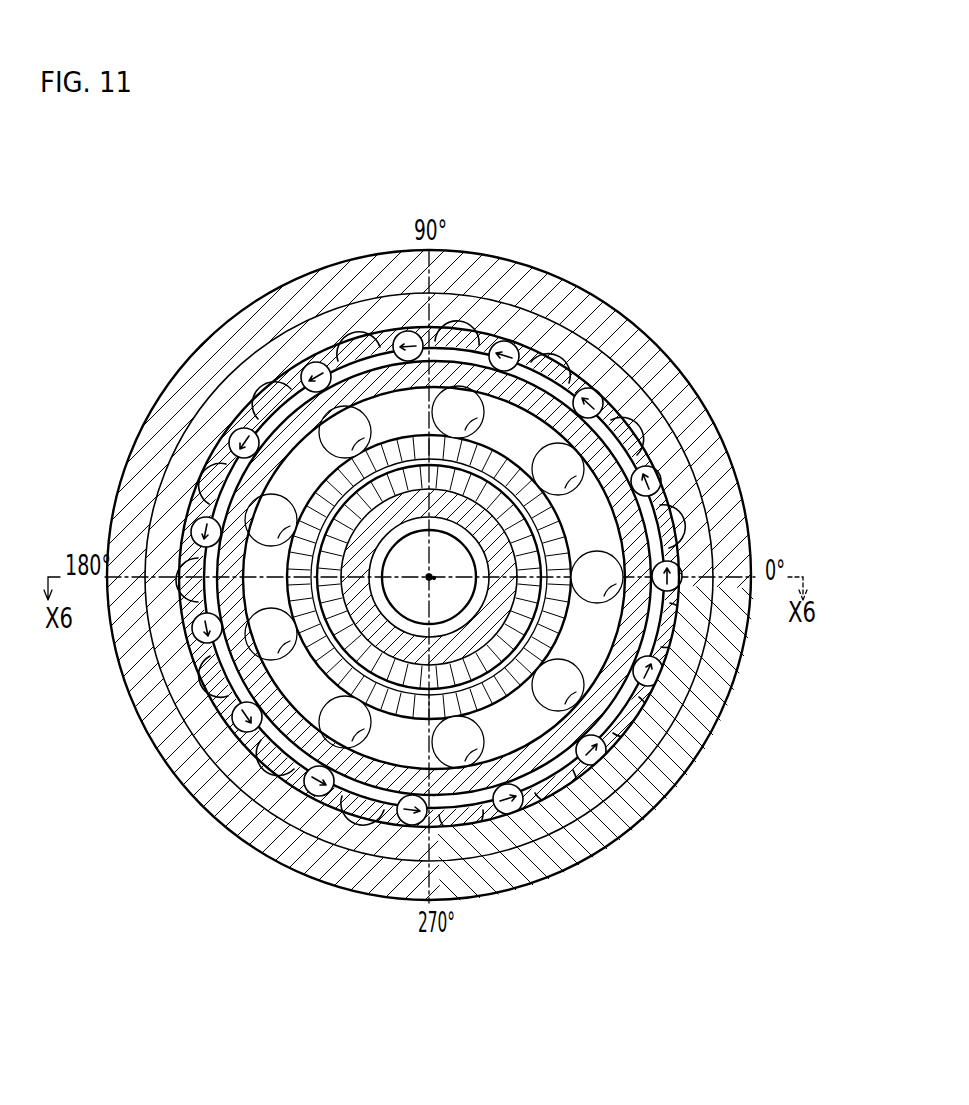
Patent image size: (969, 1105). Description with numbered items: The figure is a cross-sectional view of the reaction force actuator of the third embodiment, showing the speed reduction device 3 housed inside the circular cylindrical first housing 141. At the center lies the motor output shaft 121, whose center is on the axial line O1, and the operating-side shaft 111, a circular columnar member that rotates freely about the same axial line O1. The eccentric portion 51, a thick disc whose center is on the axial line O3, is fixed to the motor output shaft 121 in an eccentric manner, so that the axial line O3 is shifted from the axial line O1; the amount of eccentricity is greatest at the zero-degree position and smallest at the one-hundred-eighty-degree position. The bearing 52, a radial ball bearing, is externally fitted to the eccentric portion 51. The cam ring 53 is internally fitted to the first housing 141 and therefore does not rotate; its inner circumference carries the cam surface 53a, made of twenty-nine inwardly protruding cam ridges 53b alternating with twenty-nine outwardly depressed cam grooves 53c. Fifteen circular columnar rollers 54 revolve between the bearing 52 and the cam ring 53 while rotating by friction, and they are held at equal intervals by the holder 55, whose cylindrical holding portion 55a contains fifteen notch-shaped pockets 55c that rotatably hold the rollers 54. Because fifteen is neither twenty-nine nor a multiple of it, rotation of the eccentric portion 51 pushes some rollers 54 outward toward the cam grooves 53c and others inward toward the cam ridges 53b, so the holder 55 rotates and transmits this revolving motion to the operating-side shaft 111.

The speed reduction device 3 is at (239, 242).
The eccentric portion 51 is at (572, 340).
The bearing 52 is at (552, 548).
The cam ring 53 is at (705, 683).
The cam surface 53a is at (668, 503).
The cam ridge 53b is at (668, 533).
The cam groove 53c is at (586, 800).
The roller 54 is at (201, 522).
The holder 55 is at (192, 695).
The holding portion 55a is at (248, 745).
The pocket 55c is at (305, 355).
The operating-side shaft 111 is at (500, 495).
The motor output shaft 121 is at (522, 458).
The first housing 141 is at (699, 361).
The axial line O1 is at (422, 584).
The axial line O3 is at (440, 583).